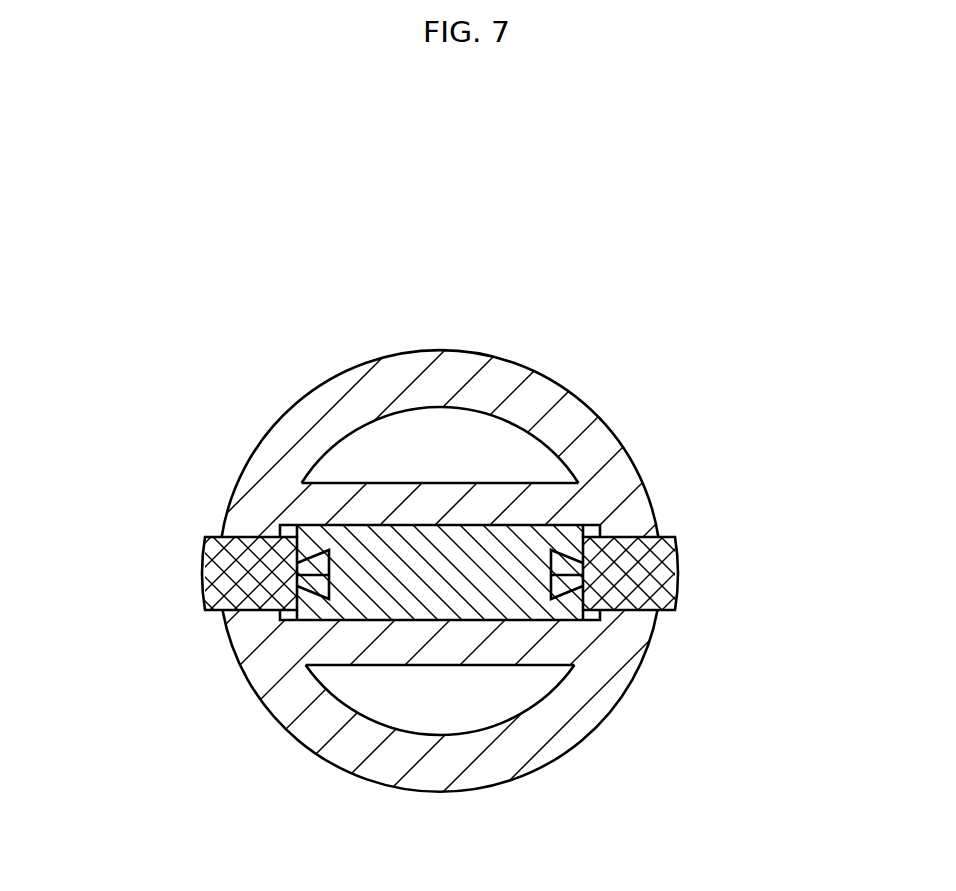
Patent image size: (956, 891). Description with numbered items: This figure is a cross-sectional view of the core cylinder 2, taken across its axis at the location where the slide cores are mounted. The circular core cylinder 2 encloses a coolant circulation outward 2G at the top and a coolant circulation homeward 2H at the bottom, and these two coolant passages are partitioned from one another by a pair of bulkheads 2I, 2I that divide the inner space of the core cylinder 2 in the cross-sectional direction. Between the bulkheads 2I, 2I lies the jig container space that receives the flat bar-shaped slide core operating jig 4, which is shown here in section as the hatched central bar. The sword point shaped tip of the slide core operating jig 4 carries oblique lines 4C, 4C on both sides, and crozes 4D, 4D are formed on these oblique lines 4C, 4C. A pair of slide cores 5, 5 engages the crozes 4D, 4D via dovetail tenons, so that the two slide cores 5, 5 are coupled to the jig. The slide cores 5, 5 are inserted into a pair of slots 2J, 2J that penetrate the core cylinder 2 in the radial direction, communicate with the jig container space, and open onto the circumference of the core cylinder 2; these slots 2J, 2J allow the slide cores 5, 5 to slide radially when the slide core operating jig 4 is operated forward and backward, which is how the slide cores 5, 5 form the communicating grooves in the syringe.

The core cylinder 2 is at (606, 425).
The coolant circulation outward 2G is at (447, 437).
The coolant circulation homeward 2H is at (447, 700).
The bulkhead 2I is at (390, 485).
The slot 2J is at (297, 575).
The slide core operating jig 4 is at (415, 555).
The oblique line 4C is at (305, 537).
The croze 4D is at (297, 565).
The slide core 5 is at (213, 568).